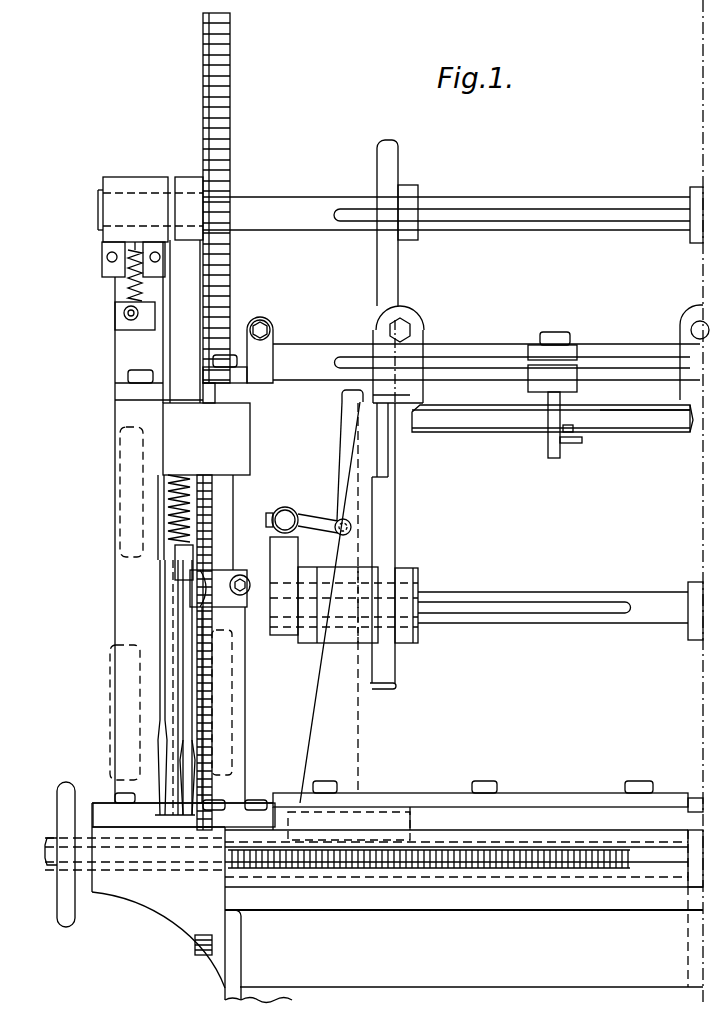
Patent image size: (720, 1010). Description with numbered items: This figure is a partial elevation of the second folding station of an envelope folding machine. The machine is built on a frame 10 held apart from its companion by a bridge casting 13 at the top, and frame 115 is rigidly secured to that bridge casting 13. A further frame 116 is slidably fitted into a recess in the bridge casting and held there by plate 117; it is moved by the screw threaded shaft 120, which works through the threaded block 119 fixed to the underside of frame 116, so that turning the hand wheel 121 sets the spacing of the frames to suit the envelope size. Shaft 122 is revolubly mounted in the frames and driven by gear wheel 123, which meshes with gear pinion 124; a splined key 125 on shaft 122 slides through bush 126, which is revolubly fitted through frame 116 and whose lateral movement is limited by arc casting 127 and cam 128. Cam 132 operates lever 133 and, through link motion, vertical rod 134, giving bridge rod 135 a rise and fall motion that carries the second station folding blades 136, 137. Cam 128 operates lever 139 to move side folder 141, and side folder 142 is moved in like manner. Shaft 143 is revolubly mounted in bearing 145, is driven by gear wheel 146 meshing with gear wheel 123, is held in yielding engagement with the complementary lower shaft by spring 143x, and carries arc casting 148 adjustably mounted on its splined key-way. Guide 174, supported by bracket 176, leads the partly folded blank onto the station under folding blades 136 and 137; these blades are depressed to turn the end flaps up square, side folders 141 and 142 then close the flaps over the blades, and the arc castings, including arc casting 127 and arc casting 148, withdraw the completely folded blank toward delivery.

The frame 10 is at (464, 916).
The bridge casting 13 is at (178, 893).
The frame 115 is at (125, 742).
The frame 116 is at (362, 746).
The plate 117 is at (558, 792).
The threaded block 119 is at (346, 870).
The screw threaded shaft 120 is at (565, 860).
The hand wheel 121 is at (72, 925).
The shaft 122 is at (652, 605).
The gear wheel 123 is at (214, 500).
The gear pinion 124 is at (196, 677).
The splined key 125 is at (516, 604).
The bush 126 is at (404, 584).
The arc casting 127 is at (383, 528).
The cam 128 is at (285, 550).
The cam 132 is at (170, 642).
The lever 133 is at (180, 695).
The vertical rod 134 is at (243, 390).
The bridge rod 135 is at (472, 352).
The folding blade 136 is at (410, 390).
The folding blade 137 is at (688, 396).
The lever 139 is at (306, 518).
The side folder 141 is at (416, 422).
The side folder 142 is at (690, 420).
The shaft 143 is at (547, 200).
The spring 143x is at (145, 296).
The bearing 145 is at (133, 186).
The gear wheel 146 is at (224, 274).
The arc casting 148 is at (385, 282).
The guide 174 is at (622, 420).
The bracket 176 is at (548, 448).